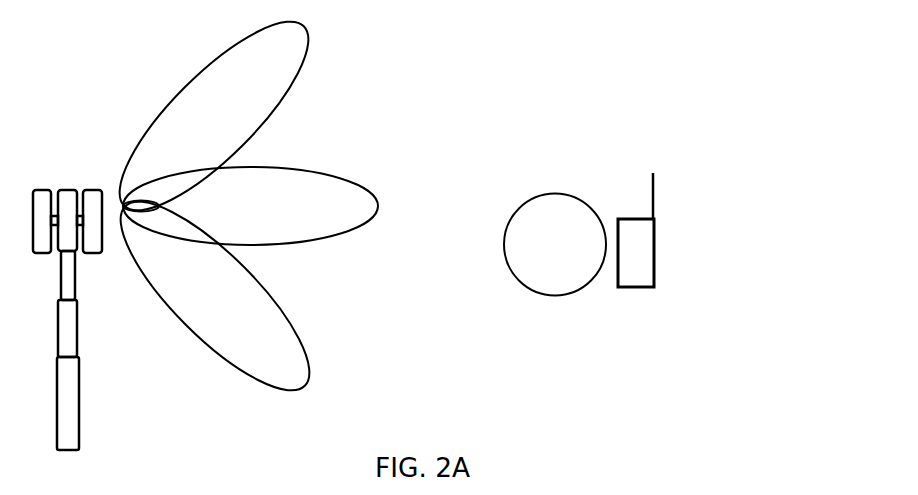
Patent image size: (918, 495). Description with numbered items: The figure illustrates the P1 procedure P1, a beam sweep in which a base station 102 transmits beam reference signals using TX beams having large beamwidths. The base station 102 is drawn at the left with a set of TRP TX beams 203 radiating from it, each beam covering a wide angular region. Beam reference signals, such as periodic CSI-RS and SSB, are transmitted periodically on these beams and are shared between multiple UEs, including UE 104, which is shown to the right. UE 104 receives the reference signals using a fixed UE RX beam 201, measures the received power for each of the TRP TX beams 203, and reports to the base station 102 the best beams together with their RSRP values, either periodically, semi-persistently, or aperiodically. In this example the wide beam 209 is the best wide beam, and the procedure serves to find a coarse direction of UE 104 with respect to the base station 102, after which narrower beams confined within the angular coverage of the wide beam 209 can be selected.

The base station 102 is at (72, 402).
The TRP TX beams 203 is at (303, 155).
The wide beam 209 is at (335, 242).
The UE RX beam 201 is at (562, 203).
The UE 104 is at (655, 268).
The P1 procedure P1 is at (747, 137).